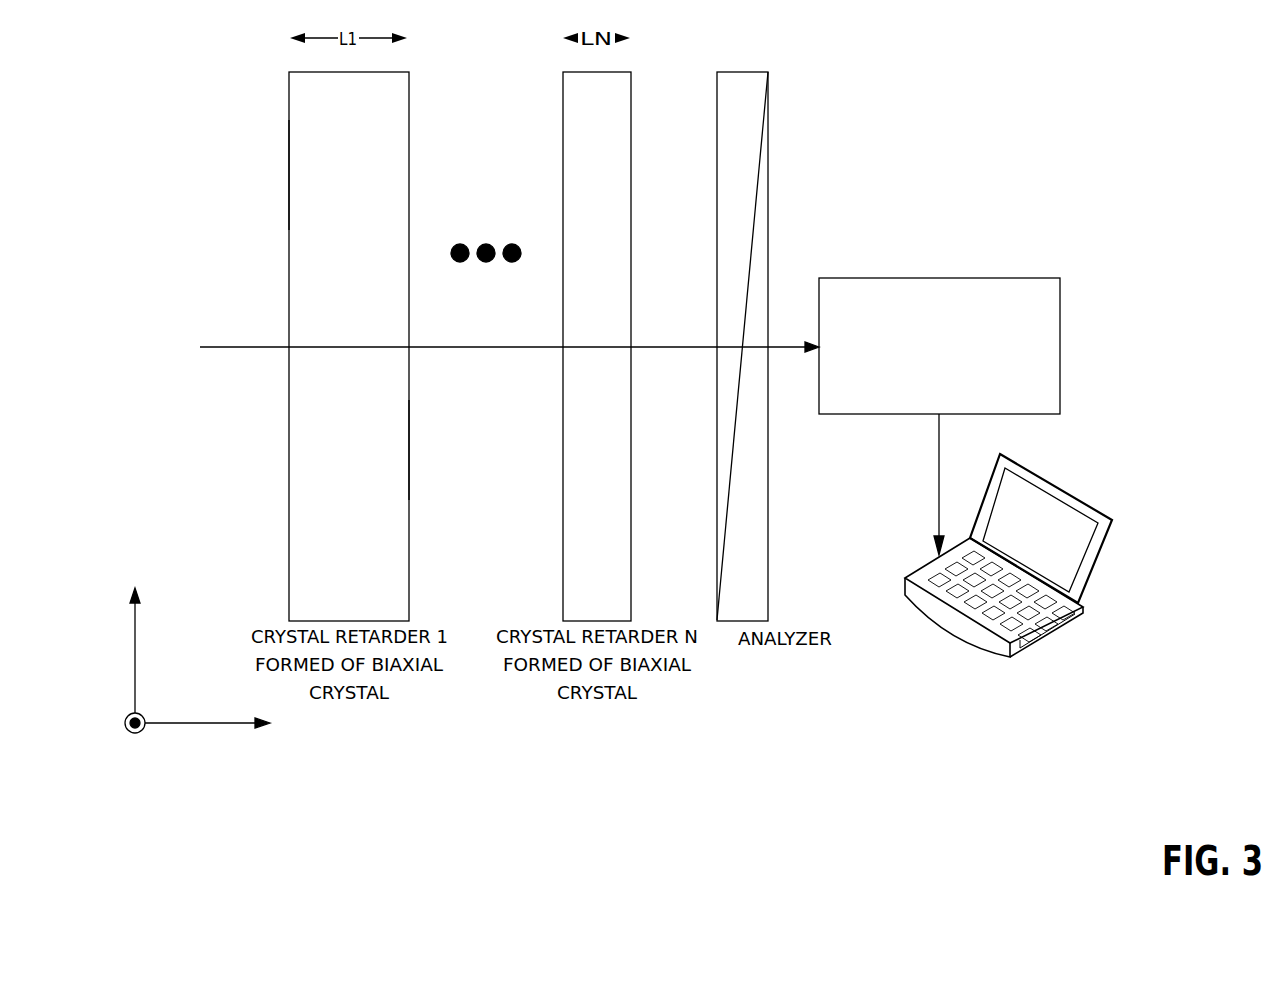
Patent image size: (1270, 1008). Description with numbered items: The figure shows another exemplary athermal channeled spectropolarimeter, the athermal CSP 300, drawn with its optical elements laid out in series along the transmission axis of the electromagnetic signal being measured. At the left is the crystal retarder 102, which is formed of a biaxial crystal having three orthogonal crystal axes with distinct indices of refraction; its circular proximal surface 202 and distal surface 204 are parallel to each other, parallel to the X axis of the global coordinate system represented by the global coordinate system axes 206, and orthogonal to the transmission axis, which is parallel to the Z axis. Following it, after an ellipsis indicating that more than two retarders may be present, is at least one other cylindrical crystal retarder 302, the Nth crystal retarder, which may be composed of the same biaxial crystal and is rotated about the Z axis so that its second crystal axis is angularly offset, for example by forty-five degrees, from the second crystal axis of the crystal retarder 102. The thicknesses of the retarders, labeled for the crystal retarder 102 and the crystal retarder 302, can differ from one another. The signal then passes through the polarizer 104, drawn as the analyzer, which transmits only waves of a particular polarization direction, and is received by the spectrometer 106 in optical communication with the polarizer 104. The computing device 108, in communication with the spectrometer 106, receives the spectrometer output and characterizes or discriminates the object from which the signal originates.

The crystal retarder 102 is at (349, 346).
The Nth crystal retarder 302 is at (597, 346).
The polarizer 104 is at (743, 72).
The spectrometer 106 is at (940, 278).
The computing device 108 is at (1062, 485).
The proximal surface 202 is at (289, 173).
The distal surface 204 is at (409, 450).
The global coordinate system axes 206 is at (170, 760).
The athermal CSP 300 is at (1025, 142).